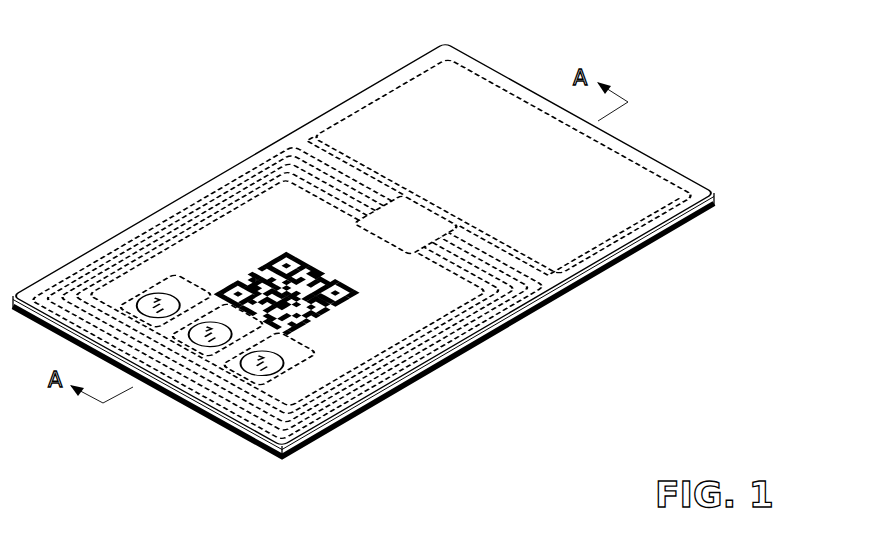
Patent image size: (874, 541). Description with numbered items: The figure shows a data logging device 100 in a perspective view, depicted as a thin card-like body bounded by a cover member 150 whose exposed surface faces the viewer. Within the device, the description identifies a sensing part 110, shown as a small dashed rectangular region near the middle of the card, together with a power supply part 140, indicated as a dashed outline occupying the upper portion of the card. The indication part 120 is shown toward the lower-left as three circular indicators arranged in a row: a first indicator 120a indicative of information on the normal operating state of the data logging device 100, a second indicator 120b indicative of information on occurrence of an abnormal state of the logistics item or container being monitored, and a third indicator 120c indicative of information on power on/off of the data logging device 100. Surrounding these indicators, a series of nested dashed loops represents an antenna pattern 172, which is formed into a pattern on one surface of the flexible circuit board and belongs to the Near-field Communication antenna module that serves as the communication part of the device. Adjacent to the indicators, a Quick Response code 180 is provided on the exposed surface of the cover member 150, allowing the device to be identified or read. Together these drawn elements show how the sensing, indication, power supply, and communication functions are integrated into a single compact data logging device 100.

The data logging device 100 is at (58, 55).
The sensing part 110 is at (401, 190).
The indication part 120 is at (217, 391).
The first indicator 120a is at (157, 320).
The second indicator 120b is at (208, 348).
The third indicator 120c is at (260, 377).
The power supply part 140 is at (674, 186).
The cover member 150 is at (704, 198).
The antenna pattern 172 is at (540, 297).
The Quick Response (QR) code 180 is at (258, 268).